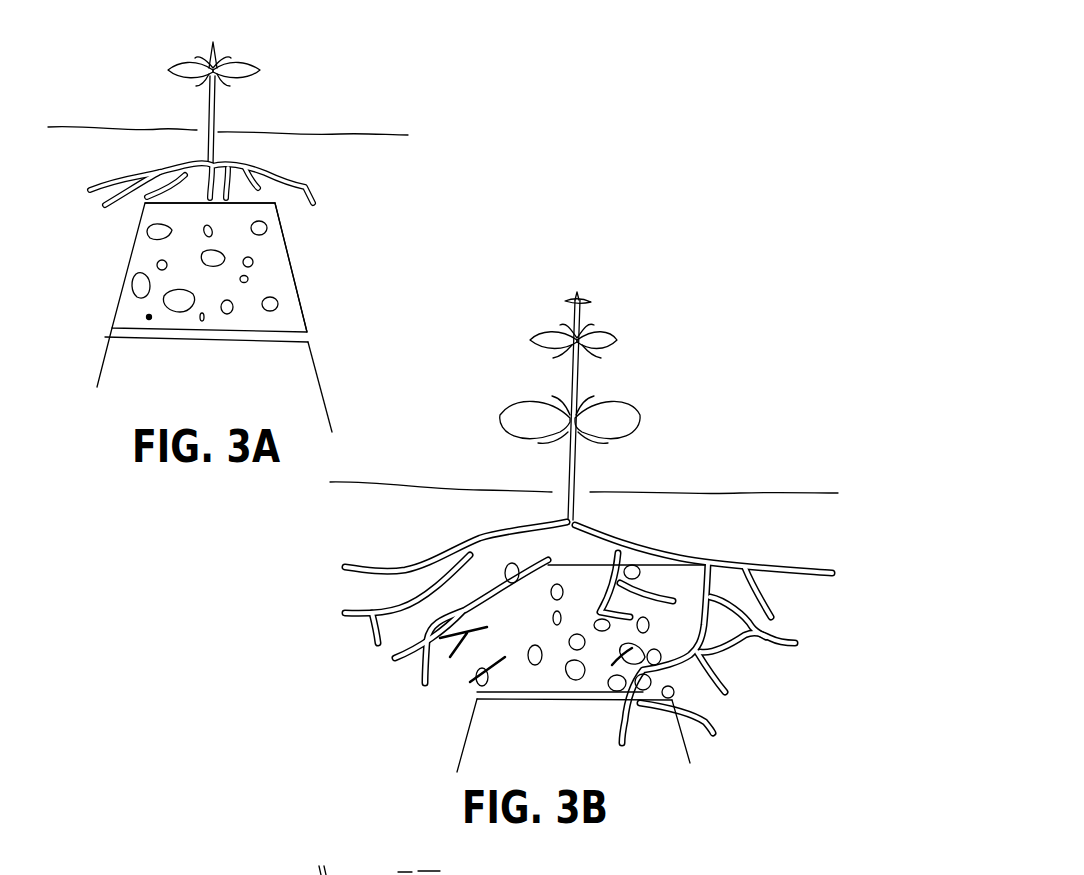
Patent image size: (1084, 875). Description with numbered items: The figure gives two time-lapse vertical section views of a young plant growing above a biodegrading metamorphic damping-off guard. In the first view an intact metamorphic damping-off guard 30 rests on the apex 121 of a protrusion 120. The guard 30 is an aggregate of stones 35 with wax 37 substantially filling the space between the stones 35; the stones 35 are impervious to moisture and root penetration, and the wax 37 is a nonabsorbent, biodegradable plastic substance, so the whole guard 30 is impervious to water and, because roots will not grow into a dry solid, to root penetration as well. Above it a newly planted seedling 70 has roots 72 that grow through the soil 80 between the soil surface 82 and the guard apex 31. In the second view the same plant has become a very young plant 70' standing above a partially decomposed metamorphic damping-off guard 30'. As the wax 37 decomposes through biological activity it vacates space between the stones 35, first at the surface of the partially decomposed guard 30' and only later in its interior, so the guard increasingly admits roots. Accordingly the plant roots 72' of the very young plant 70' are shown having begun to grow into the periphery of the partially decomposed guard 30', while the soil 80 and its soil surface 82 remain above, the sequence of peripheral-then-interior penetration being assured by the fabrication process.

In FIG. 3A, the seedling 70 is at (235, 98).
In FIG. 3B, the very young plant 70' is at (592, 406).
In FIG. 3A, the roots 72 is at (195, 174).
In FIG. 3B, the plant roots 72' is at (587, 632).
In FIG. 3A, the soil surface 82 is at (372, 135).
In FIG. 3A, the soil 80 is at (383, 152).
In FIG. 3B, the soil 80 is at (798, 532).
In FIG. 3A, the guard apex 31 is at (147, 197).
In FIG. 3A, the metamorphic damping-off guard 30 is at (178, 267).
In FIG. 3B, the partially decomposed metamorphic damping-off guard 30' is at (538, 668).
In FIG. 3A, the stones 35 is at (267, 228).
In FIG. 3B, the stones 35 is at (477, 678).
In FIG. 3A, the wax 37 is at (290, 323).
In FIG. 3B, the wax 37 is at (515, 683).
In FIG. 3A, the apex 121 is at (117, 338).
In FIG. 3A, the protrusion 120 is at (125, 382).